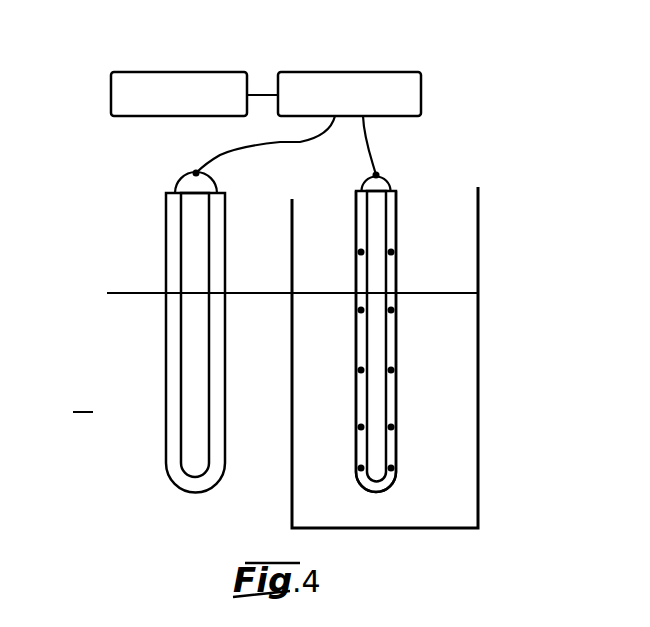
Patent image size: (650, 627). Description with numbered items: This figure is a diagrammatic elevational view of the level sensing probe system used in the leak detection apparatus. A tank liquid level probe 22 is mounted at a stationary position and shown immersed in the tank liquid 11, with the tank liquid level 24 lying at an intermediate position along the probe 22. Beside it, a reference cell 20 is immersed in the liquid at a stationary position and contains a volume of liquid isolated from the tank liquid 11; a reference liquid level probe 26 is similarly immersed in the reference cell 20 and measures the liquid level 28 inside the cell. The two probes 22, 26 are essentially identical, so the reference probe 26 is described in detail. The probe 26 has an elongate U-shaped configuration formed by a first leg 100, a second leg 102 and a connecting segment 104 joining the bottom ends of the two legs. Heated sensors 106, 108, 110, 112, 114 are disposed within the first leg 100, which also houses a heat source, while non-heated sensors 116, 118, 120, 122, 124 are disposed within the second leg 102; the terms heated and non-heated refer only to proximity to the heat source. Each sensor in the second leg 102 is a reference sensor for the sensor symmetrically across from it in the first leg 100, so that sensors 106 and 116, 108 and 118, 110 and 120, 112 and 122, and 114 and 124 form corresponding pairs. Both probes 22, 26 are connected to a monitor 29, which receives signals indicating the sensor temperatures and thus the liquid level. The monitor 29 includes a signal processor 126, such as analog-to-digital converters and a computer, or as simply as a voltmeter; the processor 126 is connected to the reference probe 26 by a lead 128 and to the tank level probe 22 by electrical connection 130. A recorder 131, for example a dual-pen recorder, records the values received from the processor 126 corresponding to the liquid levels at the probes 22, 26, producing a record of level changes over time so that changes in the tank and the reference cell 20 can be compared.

The monitor 29 is at (262, 50).
The recorder 131 is at (168, 72).
The signal processor 126 is at (368, 72).
The electrical connection 130 is at (257, 147).
The lead wire to sensing probe 128 is at (367, 146).
The tank liquid level probe 22 is at (237, 198).
The reference liquid level probe 26 is at (408, 193).
The tank liquid level 24 is at (128, 293).
The liquid level in the reference cell 28 is at (453, 293).
The reference cell 20 is at (478, 390).
The tank liquid 11 is at (83, 401).
The first leg 100 is at (356, 204).
The second leg 102 is at (396, 209).
The connecting segment 104 is at (378, 494).
The heated sensor 106 is at (361, 252).
The heated sensor 108 is at (361, 310).
The heated sensor 110 is at (361, 370).
The heated sensor 112 is at (361, 427).
The heated sensor 114 is at (361, 468).
The non-heated sensor 116 is at (391, 252).
The non-heated sensor 118 is at (391, 310).
The non-heated sensor 120 is at (391, 370).
The non-heated sensor 122 is at (391, 427).
The non-heated sensor 124 is at (391, 468).